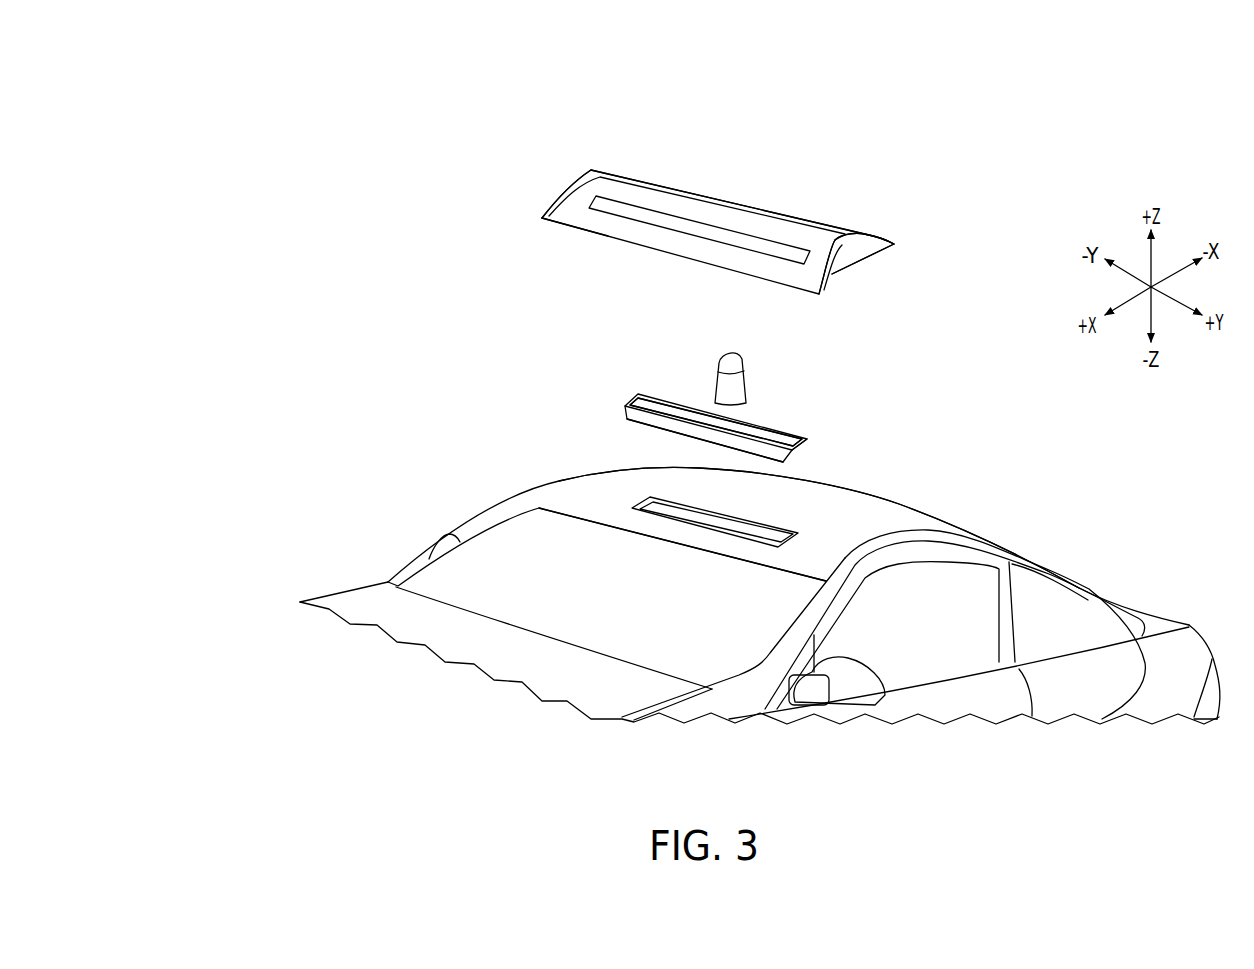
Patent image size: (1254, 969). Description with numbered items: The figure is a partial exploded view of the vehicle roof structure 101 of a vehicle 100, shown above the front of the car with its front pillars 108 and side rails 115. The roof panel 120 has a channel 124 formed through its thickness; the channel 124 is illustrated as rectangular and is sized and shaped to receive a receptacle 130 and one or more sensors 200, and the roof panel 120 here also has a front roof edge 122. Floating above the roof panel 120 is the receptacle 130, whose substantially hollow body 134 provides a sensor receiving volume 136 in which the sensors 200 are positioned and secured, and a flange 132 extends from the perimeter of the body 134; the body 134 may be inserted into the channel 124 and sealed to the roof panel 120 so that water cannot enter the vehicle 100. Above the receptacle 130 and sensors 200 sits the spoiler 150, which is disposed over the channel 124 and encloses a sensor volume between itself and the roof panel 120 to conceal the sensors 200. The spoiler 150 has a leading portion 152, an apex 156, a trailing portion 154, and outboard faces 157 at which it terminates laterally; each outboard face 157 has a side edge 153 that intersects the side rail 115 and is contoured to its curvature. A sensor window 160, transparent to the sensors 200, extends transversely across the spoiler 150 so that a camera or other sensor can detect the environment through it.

The vehicle 100 is at (302, 450).
The vehicle roof structure 101 is at (727, 114).
The front pillars 108 is at (478, 514).
The side rails 115 is at (586, 468).
The roof panel 120 is at (974, 518).
The roof front edge 122 is at (552, 502).
The channel 124 is at (657, 499).
The receptacle 130 is at (610, 387).
The flange 132 is at (808, 428).
The body 134 is at (779, 456).
The sensor receiving volume 136 is at (764, 423).
The spoiler 150 is at (776, 149).
The leading portion 152 is at (545, 214).
The side edge 153 is at (826, 266).
The trailing portion 154 is at (872, 229).
The apex 156 is at (583, 162).
The outboard faces 157 is at (559, 184).
The sensor window 160 is at (637, 199).
The sensors 200 is at (694, 346).